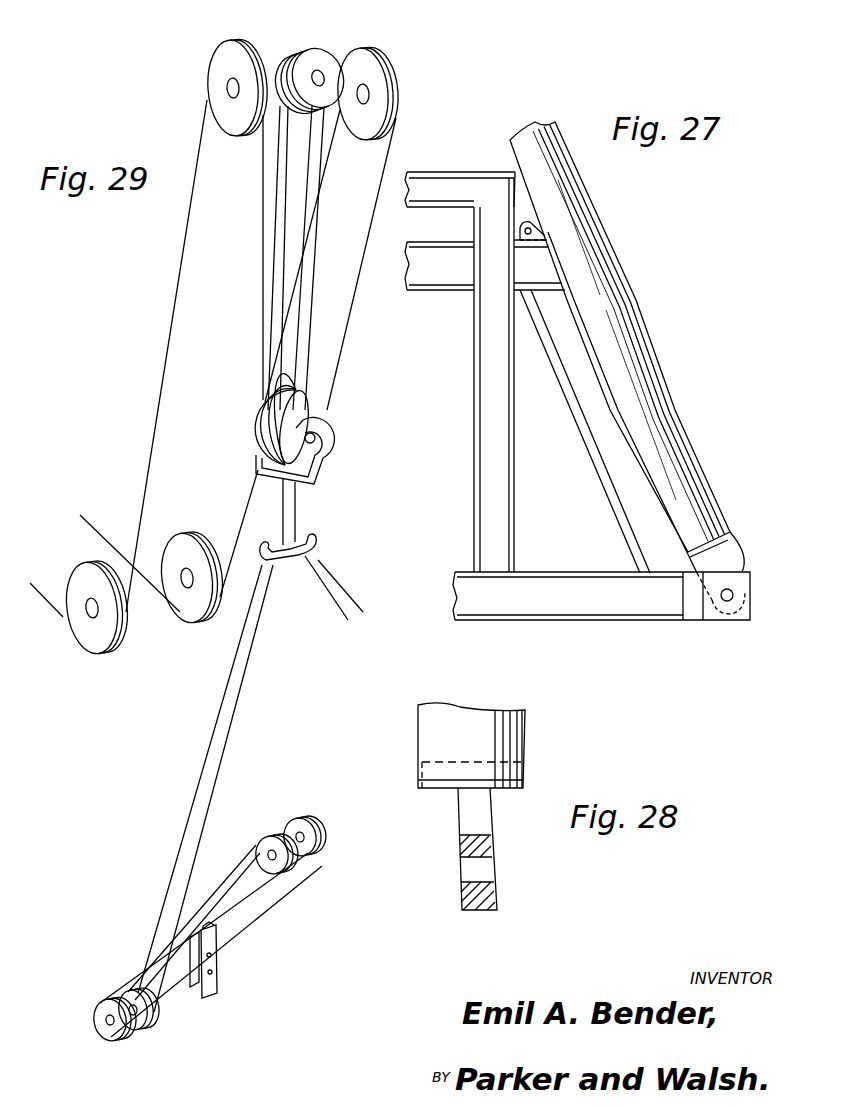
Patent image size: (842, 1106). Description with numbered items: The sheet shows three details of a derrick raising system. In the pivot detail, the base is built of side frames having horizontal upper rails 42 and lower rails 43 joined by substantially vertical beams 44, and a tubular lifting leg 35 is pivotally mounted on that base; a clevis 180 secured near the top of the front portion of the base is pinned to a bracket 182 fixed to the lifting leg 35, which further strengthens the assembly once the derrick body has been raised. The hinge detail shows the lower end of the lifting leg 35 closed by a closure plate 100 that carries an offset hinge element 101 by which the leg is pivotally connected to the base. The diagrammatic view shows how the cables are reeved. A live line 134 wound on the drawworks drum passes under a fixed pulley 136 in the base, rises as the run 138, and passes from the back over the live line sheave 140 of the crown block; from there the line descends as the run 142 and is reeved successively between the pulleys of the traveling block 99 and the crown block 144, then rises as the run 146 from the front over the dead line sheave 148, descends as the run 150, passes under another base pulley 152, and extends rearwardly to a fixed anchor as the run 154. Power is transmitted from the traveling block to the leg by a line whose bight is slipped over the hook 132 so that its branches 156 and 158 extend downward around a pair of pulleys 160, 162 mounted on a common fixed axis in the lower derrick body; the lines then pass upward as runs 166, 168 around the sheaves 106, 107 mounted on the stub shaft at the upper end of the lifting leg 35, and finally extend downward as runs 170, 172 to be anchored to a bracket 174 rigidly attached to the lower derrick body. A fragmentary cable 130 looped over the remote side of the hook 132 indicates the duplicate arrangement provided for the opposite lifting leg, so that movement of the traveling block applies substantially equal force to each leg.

In FIG. 27, the lifting leg 35 is at (655, 376).
In FIG. 28, the lifting leg 35 is at (520, 738).
In FIG. 27, the upper rail 42 is at (447, 188).
In FIG. 27, the lower rail 43 is at (575, 604).
In FIG. 27, the vertical beam 44 is at (480, 441).
In FIG. 29, the sheave block 99 is at (322, 424).
In FIG. 28, the closure plate 100 is at (440, 787).
In FIG. 28, the offset hinge element 101 is at (485, 825).
In FIG. 29, the sheave 106 is at (264, 836).
In FIG. 29, the pulley 107 is at (306, 822).
In FIG. 29, the cable 130 is at (343, 584).
In FIG. 29, the hook 132 is at (303, 563).
In FIG. 29, the live line 134 is at (57, 612).
In FIG. 29, the pulley 136 is at (88, 574).
In FIG. 29, the live line upward run 138 is at (166, 374).
In FIG. 29, the live line sheave 140 is at (216, 68).
In FIG. 29, the downward line run 142 is at (263, 250).
In FIG. 29, the crown block 144 is at (298, 48).
In FIG. 29, the upward line run 146 is at (377, 197).
In FIG. 29, the dead line sheave 148 is at (392, 72).
In FIG. 29, the downward line run 150 is at (240, 515).
In FIG. 29, the pulley 152 is at (192, 612).
In FIG. 29, the anchor line run 154 is at (100, 536).
In FIG. 29, the line branch 156 is at (190, 796).
In FIG. 29, the line branch 158 is at (225, 758).
In FIG. 29, the pulley 160 is at (96, 1030).
In FIG. 29, the pulley 162 is at (140, 1026).
In FIG. 29, the upward line run 166 is at (217, 886).
In FIG. 29, the upward line run 168 is at (226, 878).
In FIG. 29, the downward line run 170 is at (245, 920).
In FIG. 29, the downward line run 172 is at (275, 912).
In FIG. 29, the bracket 174 is at (216, 972).
In FIG. 27, the clevis 180 is at (525, 240).
In FIG. 27, the bracket 182 is at (535, 229).